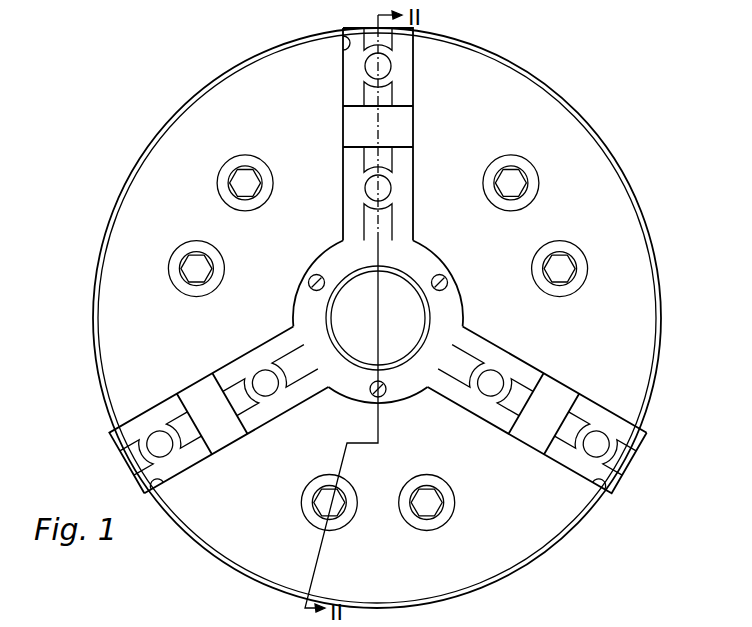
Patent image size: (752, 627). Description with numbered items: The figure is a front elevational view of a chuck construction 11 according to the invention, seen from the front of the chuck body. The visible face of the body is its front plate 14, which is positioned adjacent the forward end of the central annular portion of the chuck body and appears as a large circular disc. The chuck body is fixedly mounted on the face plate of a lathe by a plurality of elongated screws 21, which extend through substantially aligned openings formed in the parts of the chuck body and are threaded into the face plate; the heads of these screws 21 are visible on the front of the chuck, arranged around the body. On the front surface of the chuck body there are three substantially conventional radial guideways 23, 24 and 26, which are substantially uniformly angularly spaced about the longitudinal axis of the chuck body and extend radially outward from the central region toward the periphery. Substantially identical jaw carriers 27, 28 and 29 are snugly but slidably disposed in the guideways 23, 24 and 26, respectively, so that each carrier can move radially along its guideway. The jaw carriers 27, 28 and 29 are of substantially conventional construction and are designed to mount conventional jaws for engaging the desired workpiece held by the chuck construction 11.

The chuck construction 11 is at (634, 191).
The front plate 14 is at (543, 104).
The elongated screws 21 is at (190, 277).
The radial guideway 23 is at (350, 33).
The radial guideway 24 is at (601, 490).
The radial guideway 26 is at (155, 492).
The jaw carrier 27 is at (400, 47).
The jaw carrier 28 is at (625, 435).
The jaw carrier 29 is at (137, 437).